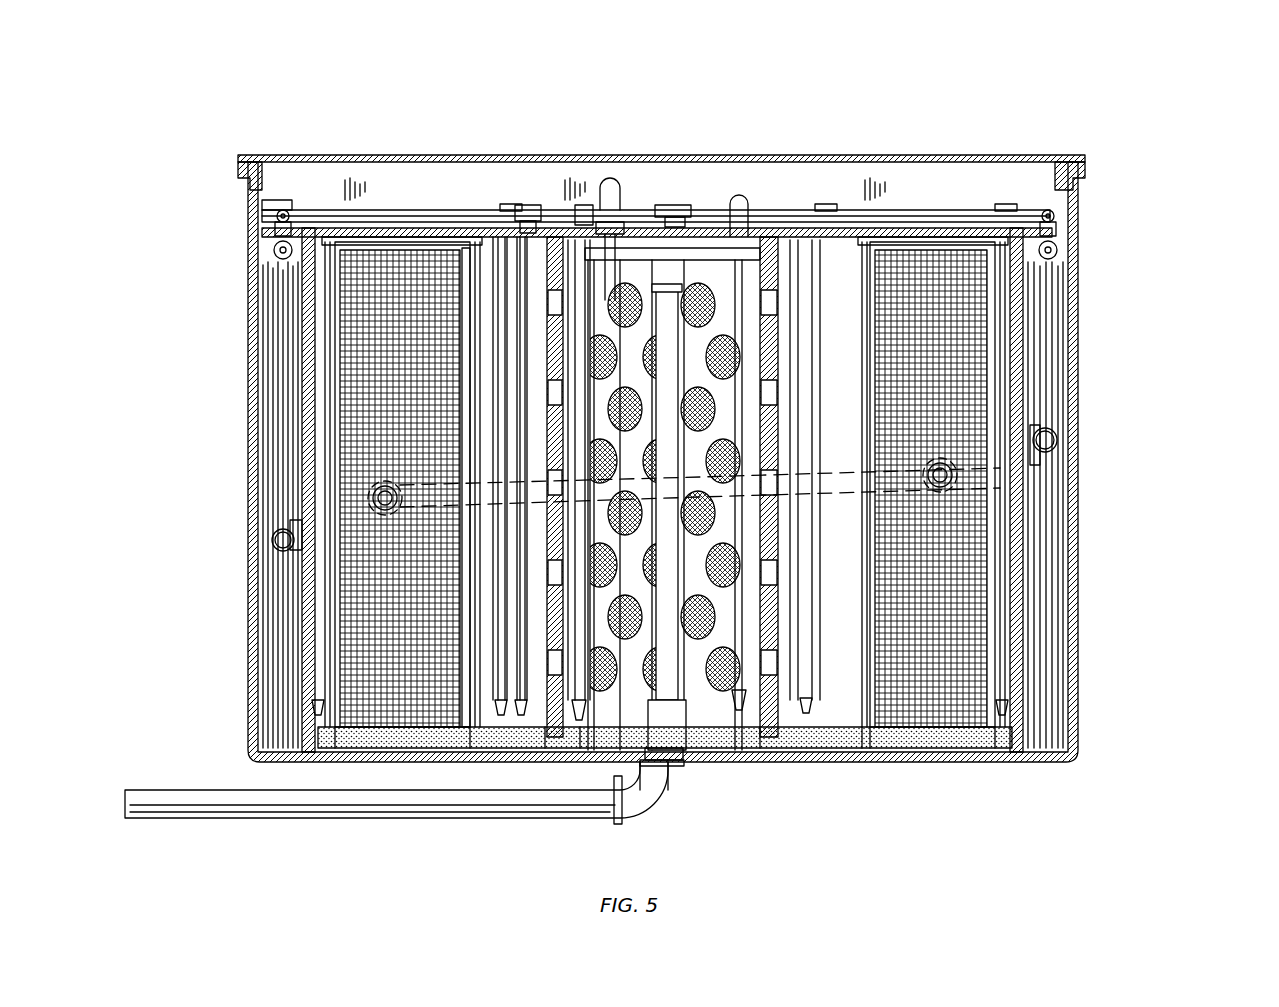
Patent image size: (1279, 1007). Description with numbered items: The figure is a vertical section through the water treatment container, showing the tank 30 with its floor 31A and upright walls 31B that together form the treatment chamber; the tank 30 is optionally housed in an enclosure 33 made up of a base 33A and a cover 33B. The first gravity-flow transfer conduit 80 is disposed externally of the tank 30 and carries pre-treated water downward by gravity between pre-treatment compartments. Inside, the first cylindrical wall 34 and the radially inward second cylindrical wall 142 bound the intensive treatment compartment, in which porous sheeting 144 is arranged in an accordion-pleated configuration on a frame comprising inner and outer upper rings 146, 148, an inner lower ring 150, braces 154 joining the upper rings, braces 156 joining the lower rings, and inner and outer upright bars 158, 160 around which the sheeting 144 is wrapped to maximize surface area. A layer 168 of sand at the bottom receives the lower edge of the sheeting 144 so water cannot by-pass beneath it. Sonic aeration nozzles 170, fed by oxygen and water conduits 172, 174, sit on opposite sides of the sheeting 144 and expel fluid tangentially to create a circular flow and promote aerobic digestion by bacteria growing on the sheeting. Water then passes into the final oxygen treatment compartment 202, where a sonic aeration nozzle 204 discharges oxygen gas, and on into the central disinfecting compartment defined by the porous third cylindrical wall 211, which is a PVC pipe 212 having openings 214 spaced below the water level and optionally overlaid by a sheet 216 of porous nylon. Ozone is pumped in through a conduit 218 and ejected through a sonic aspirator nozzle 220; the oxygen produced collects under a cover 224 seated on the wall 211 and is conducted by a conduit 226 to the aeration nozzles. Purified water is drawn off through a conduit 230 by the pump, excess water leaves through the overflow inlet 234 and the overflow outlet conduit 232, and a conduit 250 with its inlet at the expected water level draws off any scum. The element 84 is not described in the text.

The tank 30 is at (1040, 517).
The floor 31A is at (982, 765).
The upright walls 31B is at (1020, 636).
The enclosure 33 is at (241, 453).
The base 33A is at (1075, 340).
The cover 33B is at (985, 158).
The first cylindrical wall 34 is at (1022, 566).
The first gravity-flow transfer conduit 80 is at (270, 540).
The float 84 is at (1060, 445).
The second cylindrical wall 142 is at (330, 248).
The porous sheeting 144 is at (370, 452).
The inner upper ring 146 is at (466, 250).
The outer upper ring 148 is at (262, 205).
The inner lower ring 150 is at (470, 735).
The braces 154 is at (283, 212).
The braces 156 is at (392, 748).
The inner upright bars 158 is at (420, 745).
The outer upright bars 160 is at (283, 258).
The layer of sand 168 is at (920, 745).
The sonic aeration nozzles 170 is at (318, 720).
The oxygen conduit 172 is at (838, 245).
The water conduit 174 is at (790, 212).
The final oxygen treatment compartment 202 is at (548, 245).
The sonic aeration nozzle 204 is at (520, 745).
The porous third cylindrical wall 211 is at (672, 300).
The PVC pipe 212 is at (740, 760).
The openings 214 is at (650, 305).
The sheet of porous nylon 216 is at (770, 720).
The conduit 218 is at (585, 405).
The sonic aspirator nozzle 220 is at (663, 770).
The cover 224 is at (672, 206).
The conduit 226 is at (612, 180).
The conduit 230 is at (1000, 705).
The overflow outlet conduit 232 is at (527, 206).
The overflow inlet 234 is at (738, 200).
The conduit 250 is at (430, 510).